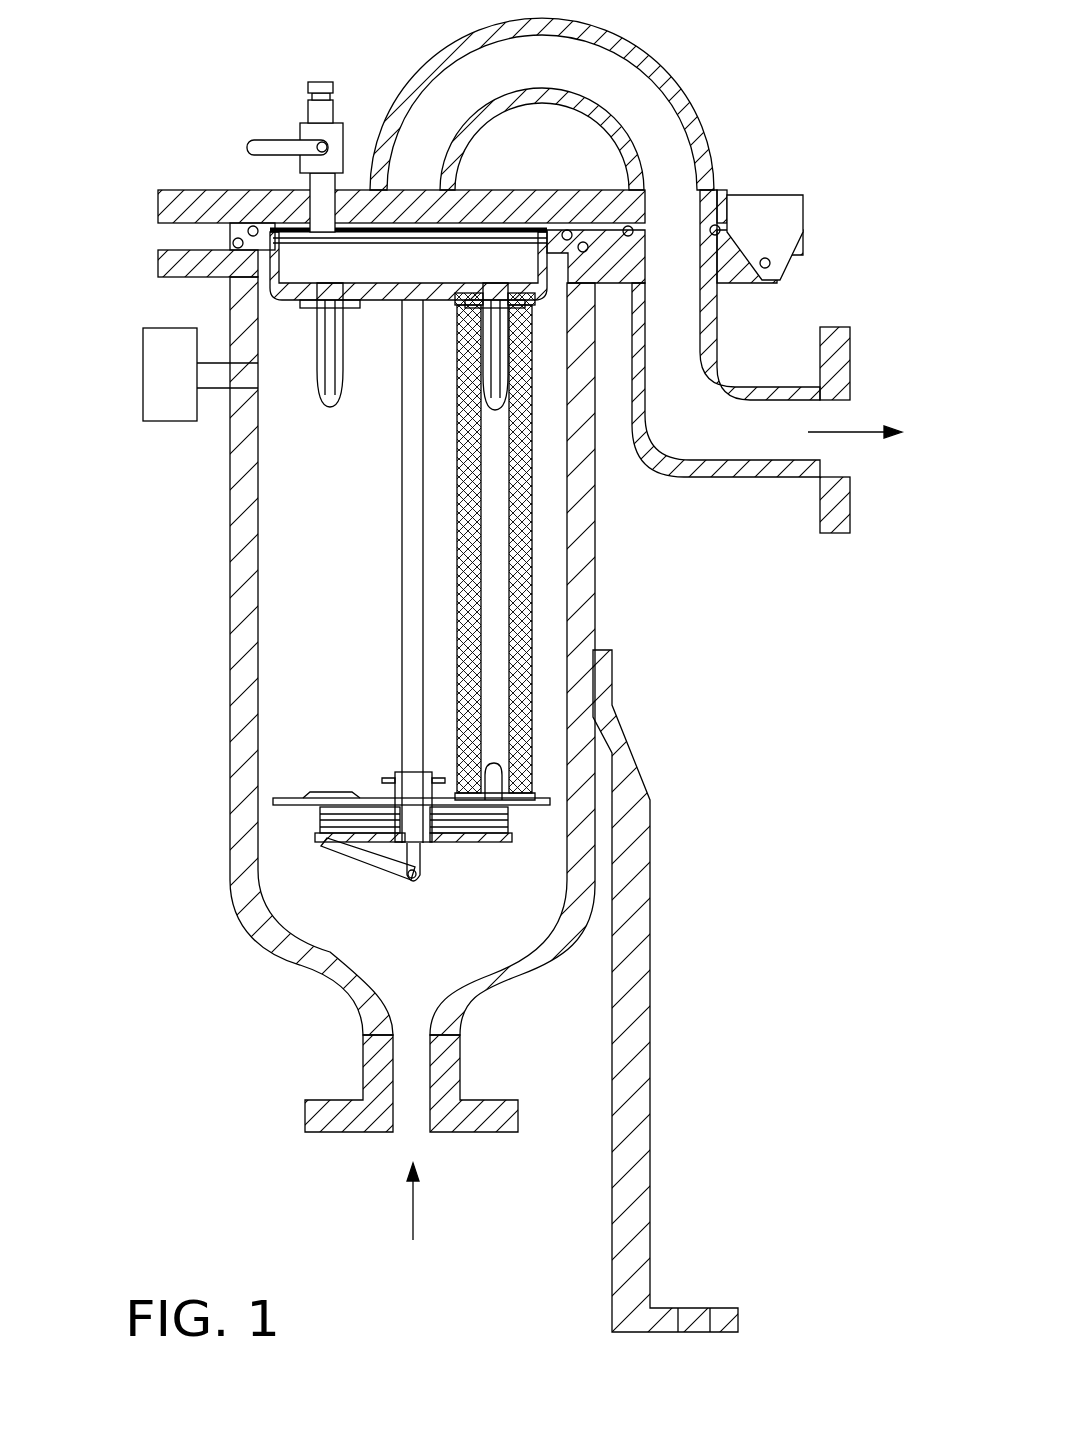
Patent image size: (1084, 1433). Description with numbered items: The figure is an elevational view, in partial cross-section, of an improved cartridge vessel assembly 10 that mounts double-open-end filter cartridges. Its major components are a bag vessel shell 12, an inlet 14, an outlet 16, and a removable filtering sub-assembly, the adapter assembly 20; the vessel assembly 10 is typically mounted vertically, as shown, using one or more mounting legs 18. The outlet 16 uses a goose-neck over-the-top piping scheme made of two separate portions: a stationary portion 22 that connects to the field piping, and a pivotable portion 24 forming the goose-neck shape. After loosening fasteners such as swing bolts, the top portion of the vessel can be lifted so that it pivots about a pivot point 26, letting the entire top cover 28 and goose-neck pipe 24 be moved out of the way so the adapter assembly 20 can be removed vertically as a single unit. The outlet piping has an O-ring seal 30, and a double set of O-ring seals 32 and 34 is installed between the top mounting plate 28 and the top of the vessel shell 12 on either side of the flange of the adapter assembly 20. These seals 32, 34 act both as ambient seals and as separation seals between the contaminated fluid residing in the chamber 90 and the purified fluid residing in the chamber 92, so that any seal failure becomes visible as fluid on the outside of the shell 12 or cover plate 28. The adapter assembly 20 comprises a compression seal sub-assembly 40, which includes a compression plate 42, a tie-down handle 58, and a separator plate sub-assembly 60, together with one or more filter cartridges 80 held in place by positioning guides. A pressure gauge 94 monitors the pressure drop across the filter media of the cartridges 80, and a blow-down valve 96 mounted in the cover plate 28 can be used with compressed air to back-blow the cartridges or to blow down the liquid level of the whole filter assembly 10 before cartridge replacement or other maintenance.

The cartridge vessel assembly 10 is at (207, 996).
The bag vessel shell 12 is at (246, 727).
The inlet 14 is at (412, 1128).
The outlet 16 is at (648, 110).
The mounting leg 18 is at (630, 1112).
The adapter assembly 20 is at (560, 695).
The stationary portion 22 is at (718, 346).
The pivotable portion 24 is at (487, 33).
The pivot point 26 is at (768, 270).
The top cover 28 is at (183, 195).
The O-ring seal 30 is at (629, 226).
The O-ring seal 32 is at (254, 226).
The O-ring seal 34 is at (236, 240).
The compression seal sub-assembly 40 is at (465, 860).
The compression plate 42 is at (287, 797).
The tie-down handle 58 is at (358, 868).
The separator plate sub-assembly 60 is at (272, 318).
The filter cartridge 80 is at (532, 500).
The chamber 90 is at (375, 600).
The chamber 92 is at (391, 262).
The pressure gauge 94 is at (167, 405).
The blow-down valve 96 is at (294, 98).